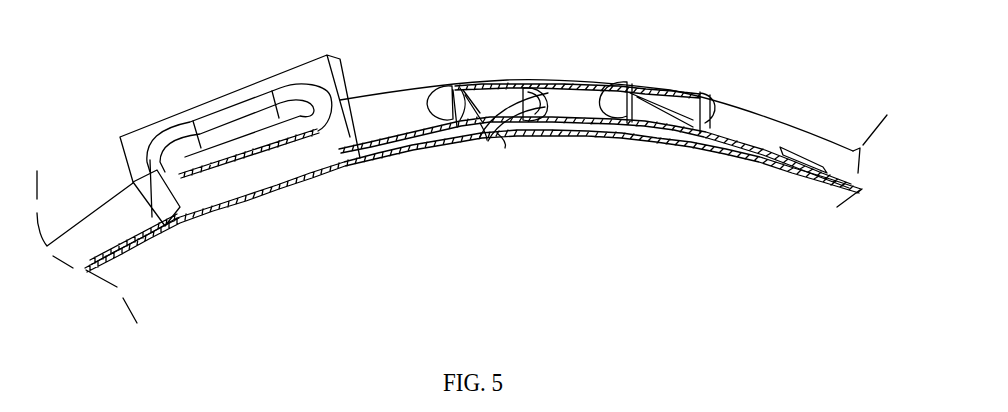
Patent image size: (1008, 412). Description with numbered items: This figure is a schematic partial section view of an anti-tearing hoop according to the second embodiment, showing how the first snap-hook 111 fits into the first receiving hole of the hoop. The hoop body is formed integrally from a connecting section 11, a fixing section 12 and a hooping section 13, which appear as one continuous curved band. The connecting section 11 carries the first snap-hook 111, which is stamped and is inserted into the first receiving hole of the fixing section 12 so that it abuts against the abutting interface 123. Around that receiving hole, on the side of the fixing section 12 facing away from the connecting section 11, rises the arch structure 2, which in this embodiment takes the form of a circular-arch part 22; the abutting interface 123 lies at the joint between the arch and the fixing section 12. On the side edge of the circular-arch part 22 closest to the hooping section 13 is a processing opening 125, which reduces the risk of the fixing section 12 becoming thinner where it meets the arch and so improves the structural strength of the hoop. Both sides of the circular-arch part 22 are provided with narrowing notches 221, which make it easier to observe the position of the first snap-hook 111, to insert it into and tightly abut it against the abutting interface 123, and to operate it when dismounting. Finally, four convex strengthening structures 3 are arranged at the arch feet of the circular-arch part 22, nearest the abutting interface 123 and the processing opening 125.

The hooping section 13 is at (290, 78).
The arch structure 2 is at (447, 47).
The circular-arch part 22 is at (494, 78).
The processing opening 125 is at (447, 84).
The narrowing notches 221 is at (524, 80).
The abutting interface 123 is at (530, 95).
The first snap-hook 111 is at (503, 130).
The convex strengthening structure 3 is at (706, 100).
The fixing section 12 is at (755, 124).
The connecting section 11 is at (744, 162).